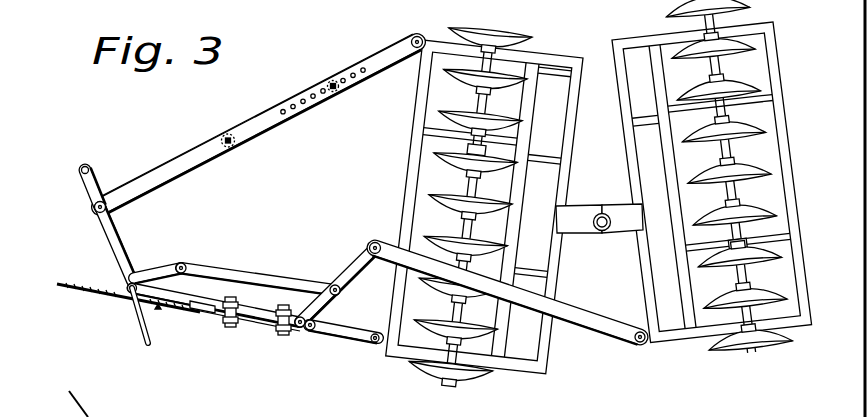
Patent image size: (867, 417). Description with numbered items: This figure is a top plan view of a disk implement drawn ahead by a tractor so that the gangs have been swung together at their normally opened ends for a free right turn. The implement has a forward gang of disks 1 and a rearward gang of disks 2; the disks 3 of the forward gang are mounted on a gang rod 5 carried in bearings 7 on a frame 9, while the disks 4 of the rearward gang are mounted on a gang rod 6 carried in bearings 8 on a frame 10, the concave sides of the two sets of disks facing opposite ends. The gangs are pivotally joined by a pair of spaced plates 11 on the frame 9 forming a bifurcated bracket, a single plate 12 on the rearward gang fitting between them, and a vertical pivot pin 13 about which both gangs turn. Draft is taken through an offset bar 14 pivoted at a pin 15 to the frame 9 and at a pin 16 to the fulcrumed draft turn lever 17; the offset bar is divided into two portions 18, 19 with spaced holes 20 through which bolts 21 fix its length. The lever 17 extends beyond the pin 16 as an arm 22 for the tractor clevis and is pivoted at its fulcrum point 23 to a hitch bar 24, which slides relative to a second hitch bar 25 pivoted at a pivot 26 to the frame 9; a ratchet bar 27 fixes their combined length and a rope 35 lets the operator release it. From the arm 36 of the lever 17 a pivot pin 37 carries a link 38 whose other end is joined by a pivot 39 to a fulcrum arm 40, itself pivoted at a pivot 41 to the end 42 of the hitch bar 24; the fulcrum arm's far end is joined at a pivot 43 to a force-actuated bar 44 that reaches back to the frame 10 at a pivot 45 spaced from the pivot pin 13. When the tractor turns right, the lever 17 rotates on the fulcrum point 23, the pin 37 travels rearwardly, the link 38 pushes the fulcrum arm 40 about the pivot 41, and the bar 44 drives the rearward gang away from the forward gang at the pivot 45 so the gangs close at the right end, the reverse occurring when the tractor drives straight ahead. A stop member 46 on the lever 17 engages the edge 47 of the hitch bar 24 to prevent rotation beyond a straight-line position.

The forward gang of disks 1 is at (559, 47).
The rearward gang of disks 2 is at (781, 29).
The disks 3 is at (514, 38).
The disks 4 is at (674, 18).
The gang rod 5 is at (462, 98).
The gang rod 6 is at (733, 153).
The bearings 7 is at (446, 146).
The bearings 8 is at (762, 245).
The frame 9 is at (570, 60).
The frame 10 is at (772, 52).
The spaced plates 11 is at (584, 224).
The single plate 12 is at (629, 223).
The pivot pin 13 is at (602, 213).
The offset bar 14 is at (294, 89).
The pin 15 is at (417, 36).
The pin 16 is at (95, 212).
The fulcrumed draft turn lever 17 is at (118, 250).
The bar portion 18 is at (184, 156).
The bar portion 19 is at (381, 57).
The spaced holes 20 is at (344, 75).
The bolts 21 is at (335, 91).
The arm 22 is at (90, 188).
The fulcrum point 23 is at (131, 296).
The hitch bar 24 is at (178, 305).
The second hitch bar 25 is at (350, 338).
The pivot 26 is at (374, 345).
The ratchet bar 27 is at (254, 333).
The flexible connecting member or rope 35 is at (86, 291).
The arm 36 is at (160, 270).
The pivot pin 37 is at (184, 262).
The link 38 is at (263, 274).
The pivot 39 is at (340, 292).
The fulcrum arm 40 is at (350, 273).
The pivot 41 is at (298, 330).
The end of the hitch bar 42 is at (311, 332).
The pivot 43 is at (374, 242).
The force-actuated bar 44 is at (595, 326).
The pivot 45 is at (636, 345).
The stop member 46 is at (147, 346).
The side or edge 47 is at (158, 308).